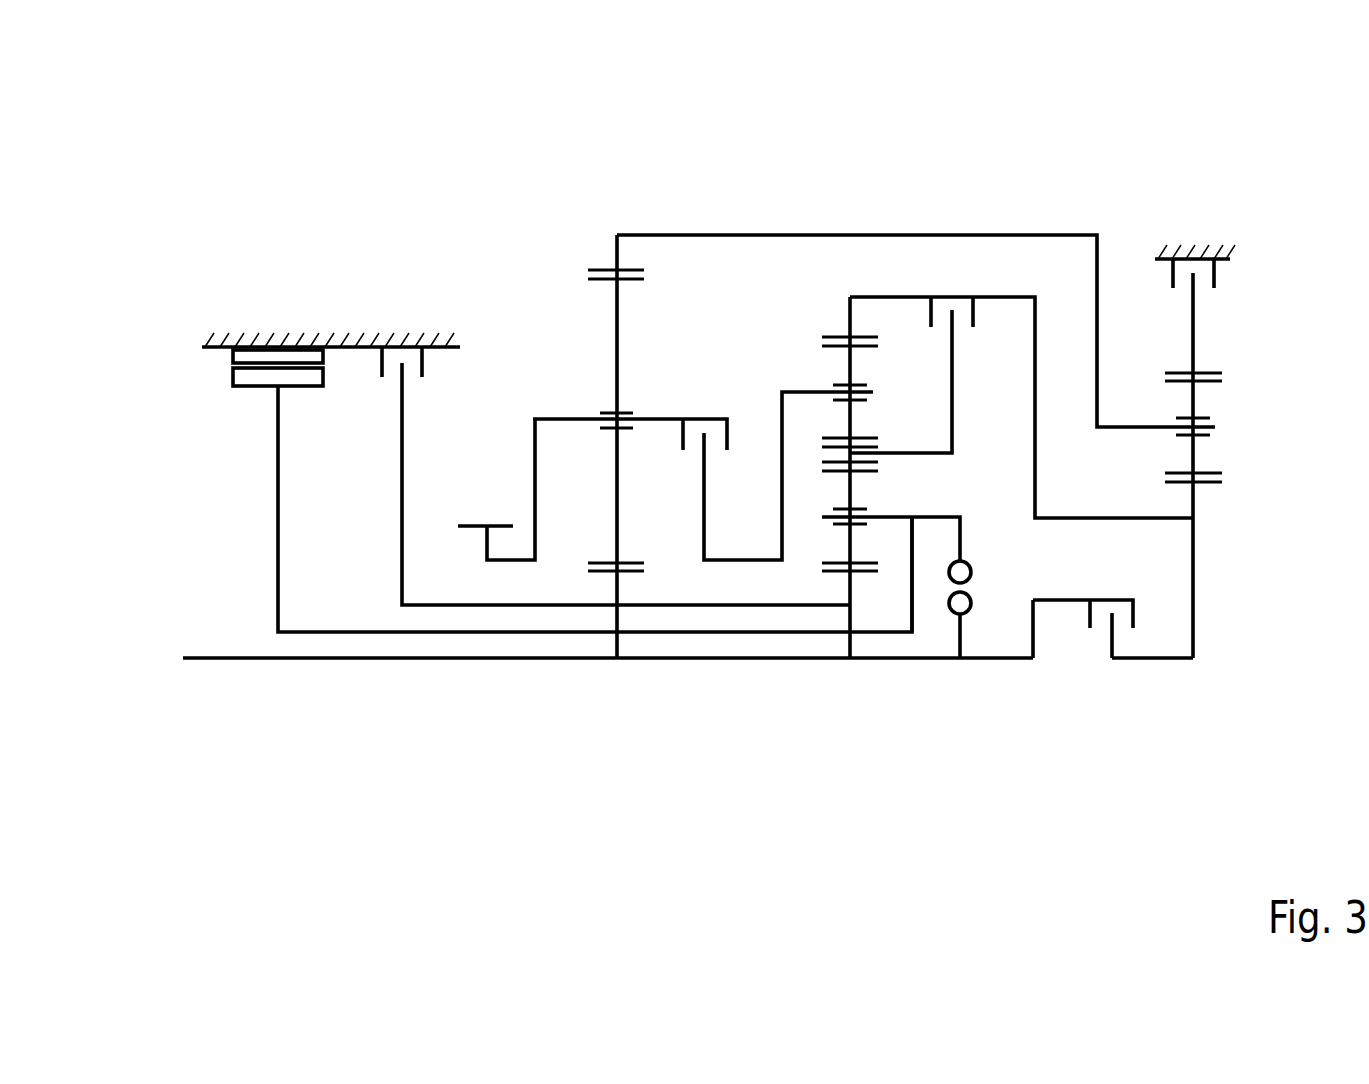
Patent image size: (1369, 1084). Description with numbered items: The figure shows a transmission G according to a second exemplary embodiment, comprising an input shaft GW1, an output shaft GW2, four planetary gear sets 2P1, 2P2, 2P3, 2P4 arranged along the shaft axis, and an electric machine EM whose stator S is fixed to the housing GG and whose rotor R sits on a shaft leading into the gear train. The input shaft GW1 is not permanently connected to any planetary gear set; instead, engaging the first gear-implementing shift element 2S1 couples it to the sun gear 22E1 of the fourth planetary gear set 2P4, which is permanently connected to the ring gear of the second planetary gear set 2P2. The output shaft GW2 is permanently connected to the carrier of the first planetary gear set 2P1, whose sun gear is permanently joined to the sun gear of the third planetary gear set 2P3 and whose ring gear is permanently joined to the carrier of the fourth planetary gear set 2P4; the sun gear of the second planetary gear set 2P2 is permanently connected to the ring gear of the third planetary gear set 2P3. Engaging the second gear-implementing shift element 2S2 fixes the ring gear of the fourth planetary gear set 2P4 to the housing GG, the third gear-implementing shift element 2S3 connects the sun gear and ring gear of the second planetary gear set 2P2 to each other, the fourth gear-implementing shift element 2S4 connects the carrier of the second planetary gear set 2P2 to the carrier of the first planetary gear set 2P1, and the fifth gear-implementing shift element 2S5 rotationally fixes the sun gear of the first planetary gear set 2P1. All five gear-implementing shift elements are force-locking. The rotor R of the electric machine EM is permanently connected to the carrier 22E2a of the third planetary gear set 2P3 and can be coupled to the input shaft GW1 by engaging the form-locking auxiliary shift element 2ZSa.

The transmission G is at (208, 175).
The housing GG is at (328, 345).
The electric machine EM is at (218, 369).
The stator S is at (232, 353).
The rotor R is at (232, 378).
The input shaft GW1 is at (267, 660).
The output shaft GW2 is at (503, 560).
The first gear-implementing shift element 2S1 is at (1125, 645).
The second gear-implementing shift element 2S2 is at (1234, 271).
The third gear-implementing shift element 2S3 is at (965, 276).
The fourth gear-implementing shift element 2S4 is at (701, 400).
The fifth gear-implementing shift element 2S5 is at (440, 358).
The first planetary gear set 2P1 is at (617, 675).
The second planetary gear set 2P2 is at (850, 273).
The third planetary gear set 2P3 is at (850, 675).
The fourth planetary gear set 2P4 is at (1193, 675).
The sun gear of the fourth planetary gear set 22E1 is at (1206, 483).
The carrier of the third planetary gear set 22E2a is at (883, 512).
The auxiliary shift element 2ZSa is at (985, 592).